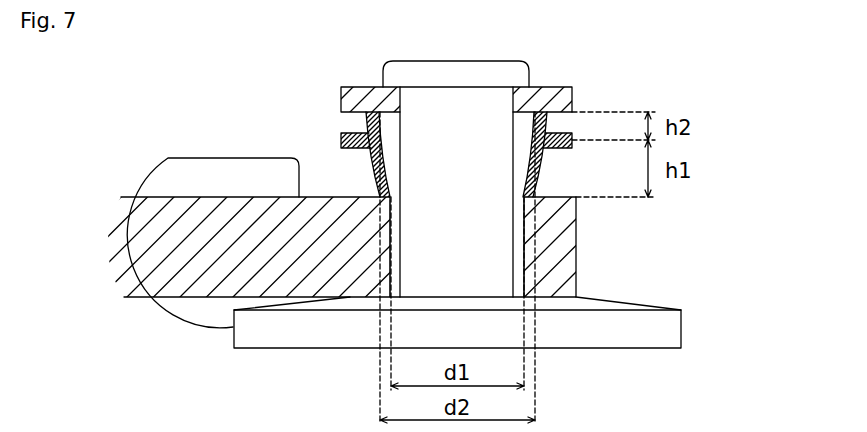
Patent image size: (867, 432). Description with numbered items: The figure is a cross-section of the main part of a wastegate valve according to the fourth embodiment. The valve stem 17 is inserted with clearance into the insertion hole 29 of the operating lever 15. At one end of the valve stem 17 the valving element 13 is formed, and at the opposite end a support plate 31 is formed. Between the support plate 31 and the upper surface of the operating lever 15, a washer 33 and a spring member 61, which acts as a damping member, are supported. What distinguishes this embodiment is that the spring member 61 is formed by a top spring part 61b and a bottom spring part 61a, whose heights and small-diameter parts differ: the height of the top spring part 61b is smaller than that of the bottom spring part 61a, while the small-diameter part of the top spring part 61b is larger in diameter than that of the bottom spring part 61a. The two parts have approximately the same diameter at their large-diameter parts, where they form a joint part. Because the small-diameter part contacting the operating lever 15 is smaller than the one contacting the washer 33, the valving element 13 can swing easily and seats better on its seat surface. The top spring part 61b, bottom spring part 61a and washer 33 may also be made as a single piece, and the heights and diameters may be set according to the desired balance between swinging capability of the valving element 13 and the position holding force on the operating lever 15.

The valving element 13 is at (681, 332).
The operating lever 15 is at (576, 240).
The valve stem 17 is at (473, 263).
The insertion hole 29 is at (393, 282).
The support plate 31 is at (527, 66).
The washer 33 is at (572, 100).
The spring member 61 is at (432, 141).
The bottom spring part 61a is at (372, 165).
The top spring part 61b is at (367, 127).